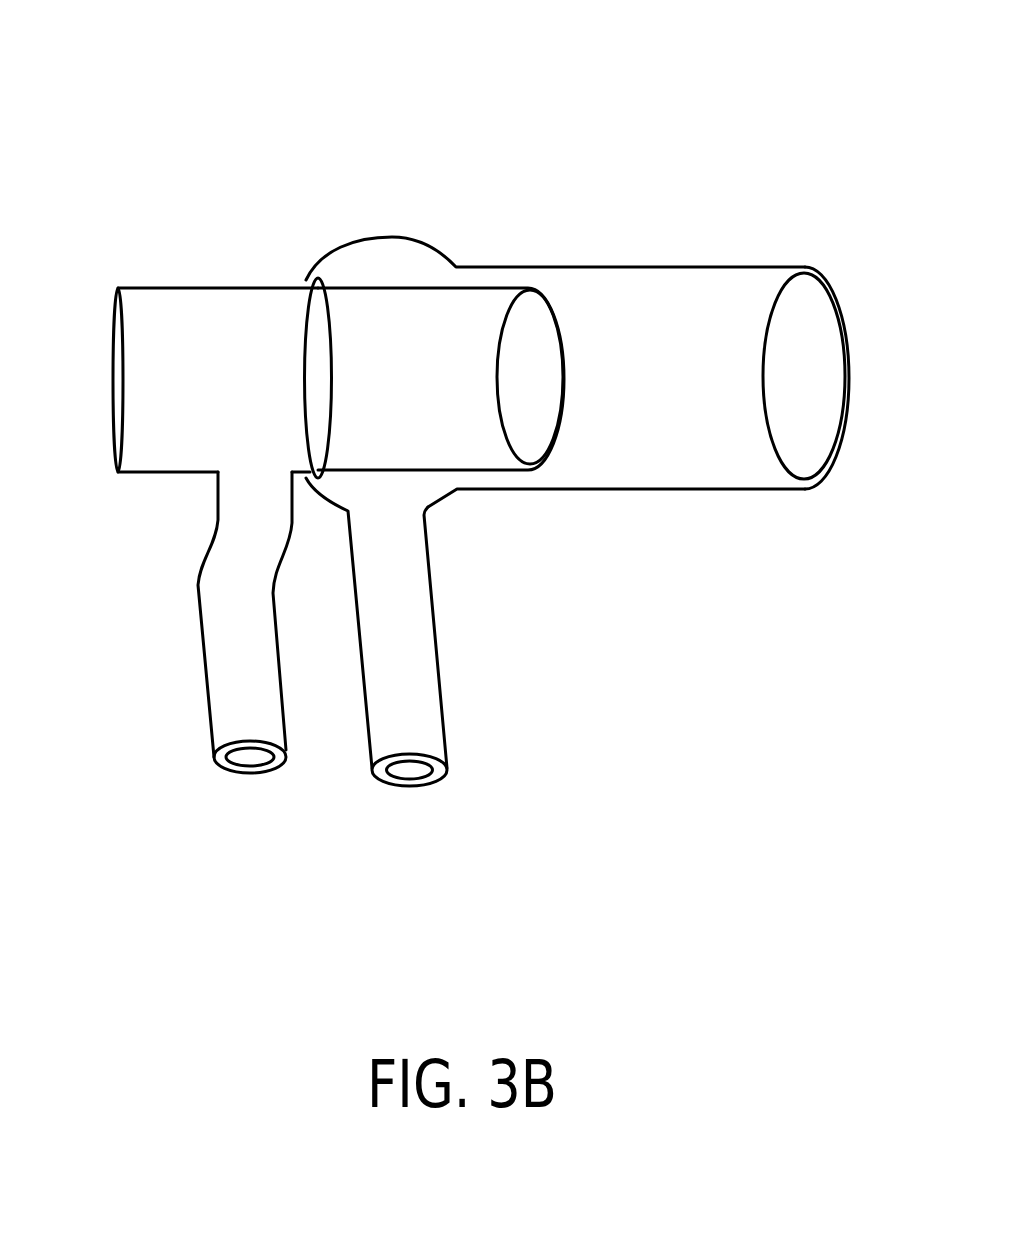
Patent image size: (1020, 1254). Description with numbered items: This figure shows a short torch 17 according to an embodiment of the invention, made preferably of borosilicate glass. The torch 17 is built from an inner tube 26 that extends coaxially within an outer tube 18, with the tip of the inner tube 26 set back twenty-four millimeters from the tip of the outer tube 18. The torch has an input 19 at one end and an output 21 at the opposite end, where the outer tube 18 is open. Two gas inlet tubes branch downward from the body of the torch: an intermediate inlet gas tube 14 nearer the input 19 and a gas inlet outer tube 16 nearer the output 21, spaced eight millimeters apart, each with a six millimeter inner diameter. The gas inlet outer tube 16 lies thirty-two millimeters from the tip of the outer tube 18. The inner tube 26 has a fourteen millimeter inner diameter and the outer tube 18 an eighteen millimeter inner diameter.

The intermediate inlet gas tube 14 is at (205, 675).
The gas inlet outer tube 16 is at (438, 663).
The torch 17 is at (462, 118).
The outer tube 18 is at (637, 266).
The input 19 is at (115, 363).
The output 21 is at (845, 353).
The inner tube 26 is at (535, 290).